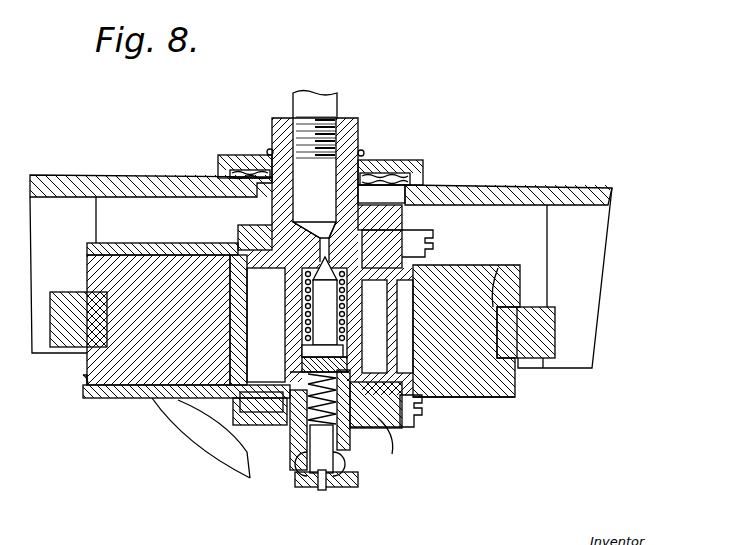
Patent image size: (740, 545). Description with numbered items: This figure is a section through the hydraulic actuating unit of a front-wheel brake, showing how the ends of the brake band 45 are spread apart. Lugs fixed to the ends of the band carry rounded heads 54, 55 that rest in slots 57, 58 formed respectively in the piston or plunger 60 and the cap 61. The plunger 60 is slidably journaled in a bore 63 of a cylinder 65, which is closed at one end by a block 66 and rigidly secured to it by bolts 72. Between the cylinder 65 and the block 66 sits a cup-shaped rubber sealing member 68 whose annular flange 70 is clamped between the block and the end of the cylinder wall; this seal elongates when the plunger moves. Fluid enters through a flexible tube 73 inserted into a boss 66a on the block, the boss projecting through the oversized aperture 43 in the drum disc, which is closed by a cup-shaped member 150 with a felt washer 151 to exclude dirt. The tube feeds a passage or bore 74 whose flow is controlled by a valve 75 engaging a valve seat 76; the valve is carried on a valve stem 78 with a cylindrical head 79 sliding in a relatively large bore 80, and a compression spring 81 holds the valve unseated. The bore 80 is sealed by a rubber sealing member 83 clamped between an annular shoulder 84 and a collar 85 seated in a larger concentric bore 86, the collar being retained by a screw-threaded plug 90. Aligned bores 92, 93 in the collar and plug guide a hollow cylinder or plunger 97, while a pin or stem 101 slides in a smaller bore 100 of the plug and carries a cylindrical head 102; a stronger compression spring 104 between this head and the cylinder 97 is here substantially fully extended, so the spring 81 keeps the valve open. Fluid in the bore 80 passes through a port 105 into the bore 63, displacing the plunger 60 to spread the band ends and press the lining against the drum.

The brake band 45 is at (598, 278).
The cup-shaped member 150 is at (222, 158).
The washer 151 is at (252, 170).
The aperture 43 is at (419, 160).
The passage or bore 74 is at (393, 176).
The boss 66a is at (358, 124).
The flexible tube 73 is at (316, 110).
The valve 75 is at (380, 217).
The compression spring 81 is at (373, 260).
The bolts 72 is at (428, 228).
The slot 57 is at (130, 258).
The piston or plunger 60 is at (163, 265).
The annular flange 70 is at (240, 252).
The rounded head 54 is at (70, 303).
The bore 63 is at (85, 377).
The cylinder 65 is at (114, 398).
The sealing member 68 is at (233, 400).
The block 66 is at (262, 425).
The valve seat 76 is at (313, 272).
The valve stem 78 is at (325, 298).
The port 105 is at (293, 325).
The bore 80 is at (340, 347).
The hollow cylinder or plunger 97 is at (343, 359).
The collar 85 is at (386, 382).
The cylindrical head 79 is at (370, 342).
The sealing member 83 is at (345, 358).
The slot 58 is at (466, 324).
The rounded head 55 is at (556, 356).
The cap 61 is at (516, 391).
The annular shoulder 84 is at (422, 398).
The bore 86 is at (396, 430).
The bore 92 is at (291, 430).
The bore 93 is at (292, 444).
The cylindrical head 102 is at (321, 431).
The plug 90 is at (348, 441).
The compression spring 104 is at (388, 444).
The bore 100 is at (291, 458).
The pin or stem 101 is at (320, 488).